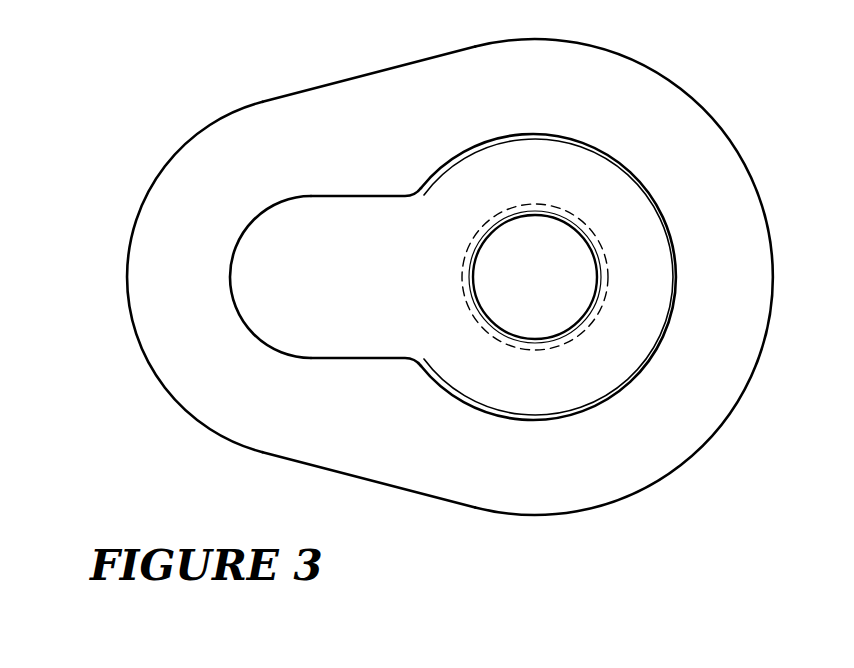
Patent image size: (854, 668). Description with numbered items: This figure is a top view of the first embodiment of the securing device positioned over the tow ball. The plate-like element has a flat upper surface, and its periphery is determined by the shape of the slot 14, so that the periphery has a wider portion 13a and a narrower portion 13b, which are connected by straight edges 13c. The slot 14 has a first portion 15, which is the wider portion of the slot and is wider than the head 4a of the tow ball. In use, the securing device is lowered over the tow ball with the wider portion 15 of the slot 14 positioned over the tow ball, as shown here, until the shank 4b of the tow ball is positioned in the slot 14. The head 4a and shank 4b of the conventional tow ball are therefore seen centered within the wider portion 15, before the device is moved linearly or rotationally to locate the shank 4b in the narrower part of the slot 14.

The wider portion 13a is at (700, 108).
The narrower portion 13b is at (127, 265).
The straight edges 13c is at (330, 82).
The slot 14 is at (330, 312).
The first portion 15 is at (258, 230).
The head 4a is at (607, 369).
The shank 4b is at (490, 218).